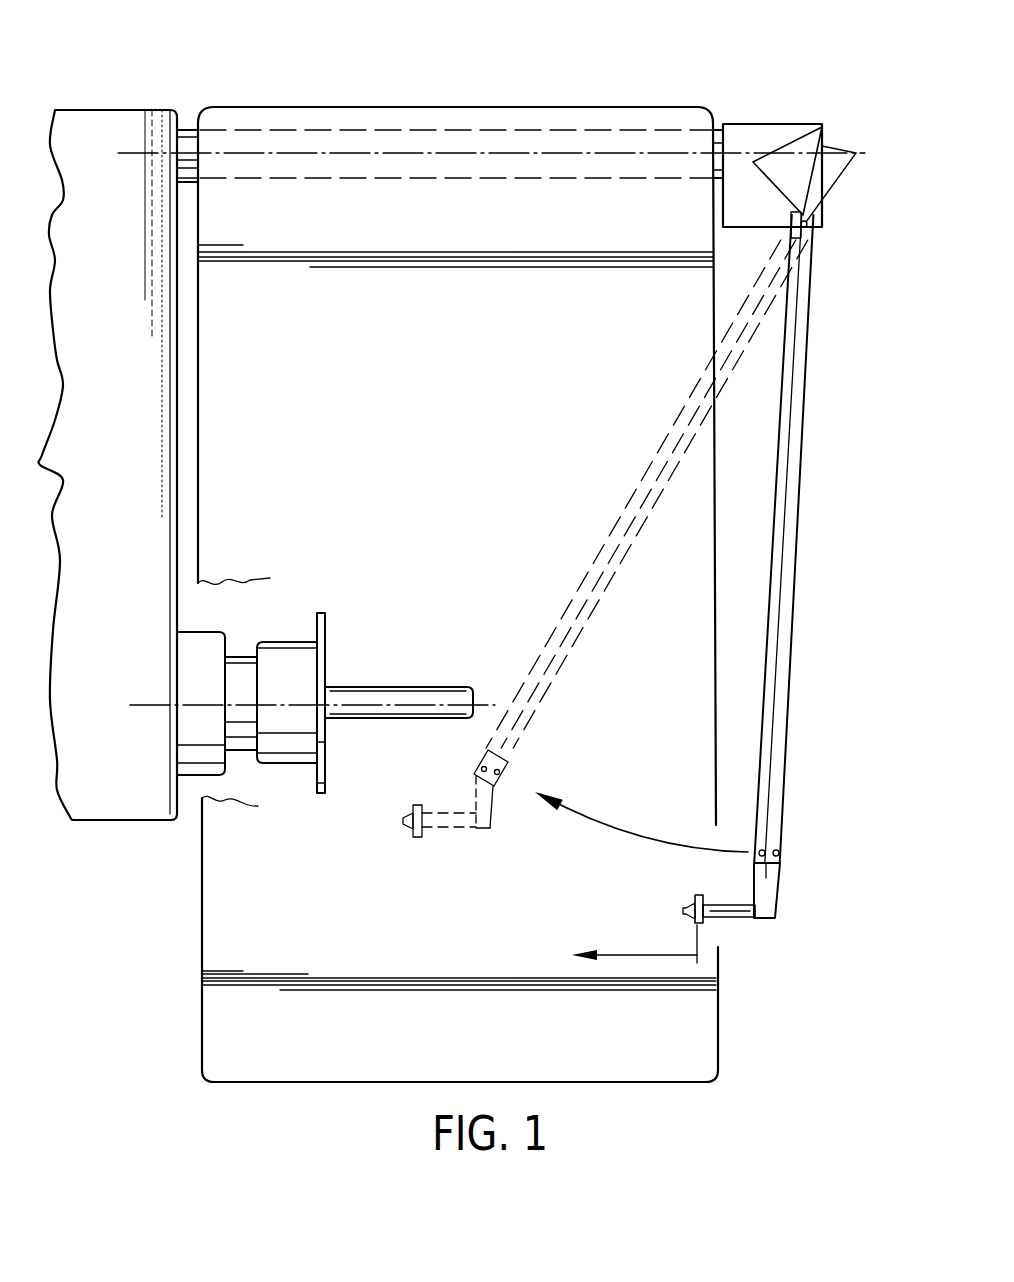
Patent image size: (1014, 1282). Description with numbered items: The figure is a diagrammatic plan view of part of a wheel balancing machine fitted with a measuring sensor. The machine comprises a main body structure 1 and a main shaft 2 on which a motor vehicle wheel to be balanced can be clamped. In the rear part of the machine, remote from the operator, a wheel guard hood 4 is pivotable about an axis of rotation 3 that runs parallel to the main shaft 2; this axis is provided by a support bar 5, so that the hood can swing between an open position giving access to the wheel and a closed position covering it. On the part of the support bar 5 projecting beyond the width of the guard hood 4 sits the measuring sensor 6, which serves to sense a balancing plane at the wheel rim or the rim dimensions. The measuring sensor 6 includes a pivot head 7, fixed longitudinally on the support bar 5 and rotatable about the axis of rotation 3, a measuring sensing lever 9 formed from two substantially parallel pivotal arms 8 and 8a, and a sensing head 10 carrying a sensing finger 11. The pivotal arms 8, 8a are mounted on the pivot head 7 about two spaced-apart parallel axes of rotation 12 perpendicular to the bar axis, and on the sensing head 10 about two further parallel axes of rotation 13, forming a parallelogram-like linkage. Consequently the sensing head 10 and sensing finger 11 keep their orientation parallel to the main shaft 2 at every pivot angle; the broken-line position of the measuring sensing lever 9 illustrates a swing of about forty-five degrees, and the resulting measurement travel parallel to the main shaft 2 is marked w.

The main body structure 1 is at (116, 800).
The main shaft 2 is at (196, 735).
The axis of rotation 3 is at (427, 148).
The wheel guard hood 4 is at (515, 148).
The support bar 5 is at (716, 128).
The measuring sensor 6 is at (841, 126).
The pivot head 7 is at (760, 133).
The pivotal arm 8 is at (788, 335).
The pivotal arm 8a is at (798, 377).
The measuring sensing lever 9 is at (826, 633).
The sensing head 10 is at (768, 897).
The sensing finger 11 is at (738, 912).
The axes of rotation 12 is at (807, 224).
The axes of rotation 13 is at (779, 852).